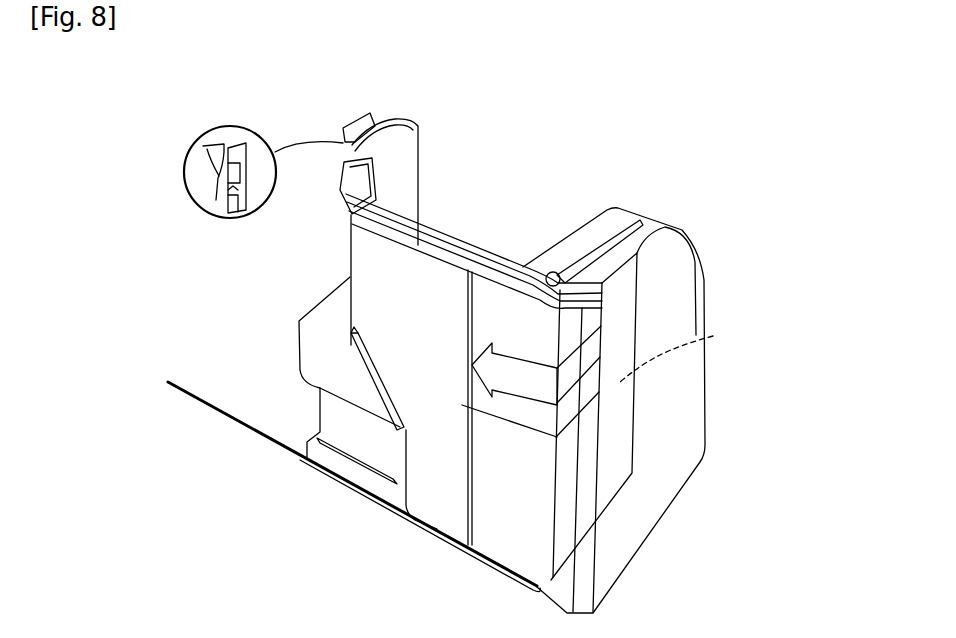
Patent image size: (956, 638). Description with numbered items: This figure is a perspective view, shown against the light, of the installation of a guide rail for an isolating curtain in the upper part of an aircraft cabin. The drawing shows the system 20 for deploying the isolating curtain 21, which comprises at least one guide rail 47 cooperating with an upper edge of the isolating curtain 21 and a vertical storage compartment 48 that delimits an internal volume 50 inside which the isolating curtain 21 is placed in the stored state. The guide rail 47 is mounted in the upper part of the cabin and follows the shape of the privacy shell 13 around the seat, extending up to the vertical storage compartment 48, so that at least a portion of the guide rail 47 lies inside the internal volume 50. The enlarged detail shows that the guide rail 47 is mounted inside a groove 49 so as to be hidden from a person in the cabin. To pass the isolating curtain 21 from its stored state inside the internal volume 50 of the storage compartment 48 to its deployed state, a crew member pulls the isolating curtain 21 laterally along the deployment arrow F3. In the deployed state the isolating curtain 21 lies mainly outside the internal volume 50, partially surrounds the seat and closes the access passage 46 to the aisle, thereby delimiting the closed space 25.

The privacy shell 13 is at (325, 327).
The system for deploying the isolating curtain 20 is at (462, 250).
The isolating curtain 21 is at (233, 210).
The closed space 25 is at (570, 210).
The access passage 46 is at (455, 552).
The guide rail 47 is at (233, 174).
The vertical storage compartment 48 is at (588, 438).
The groove 49 is at (223, 143).
The internal volume 50 is at (713, 336).
The deployment arrow F3 is at (523, 380).